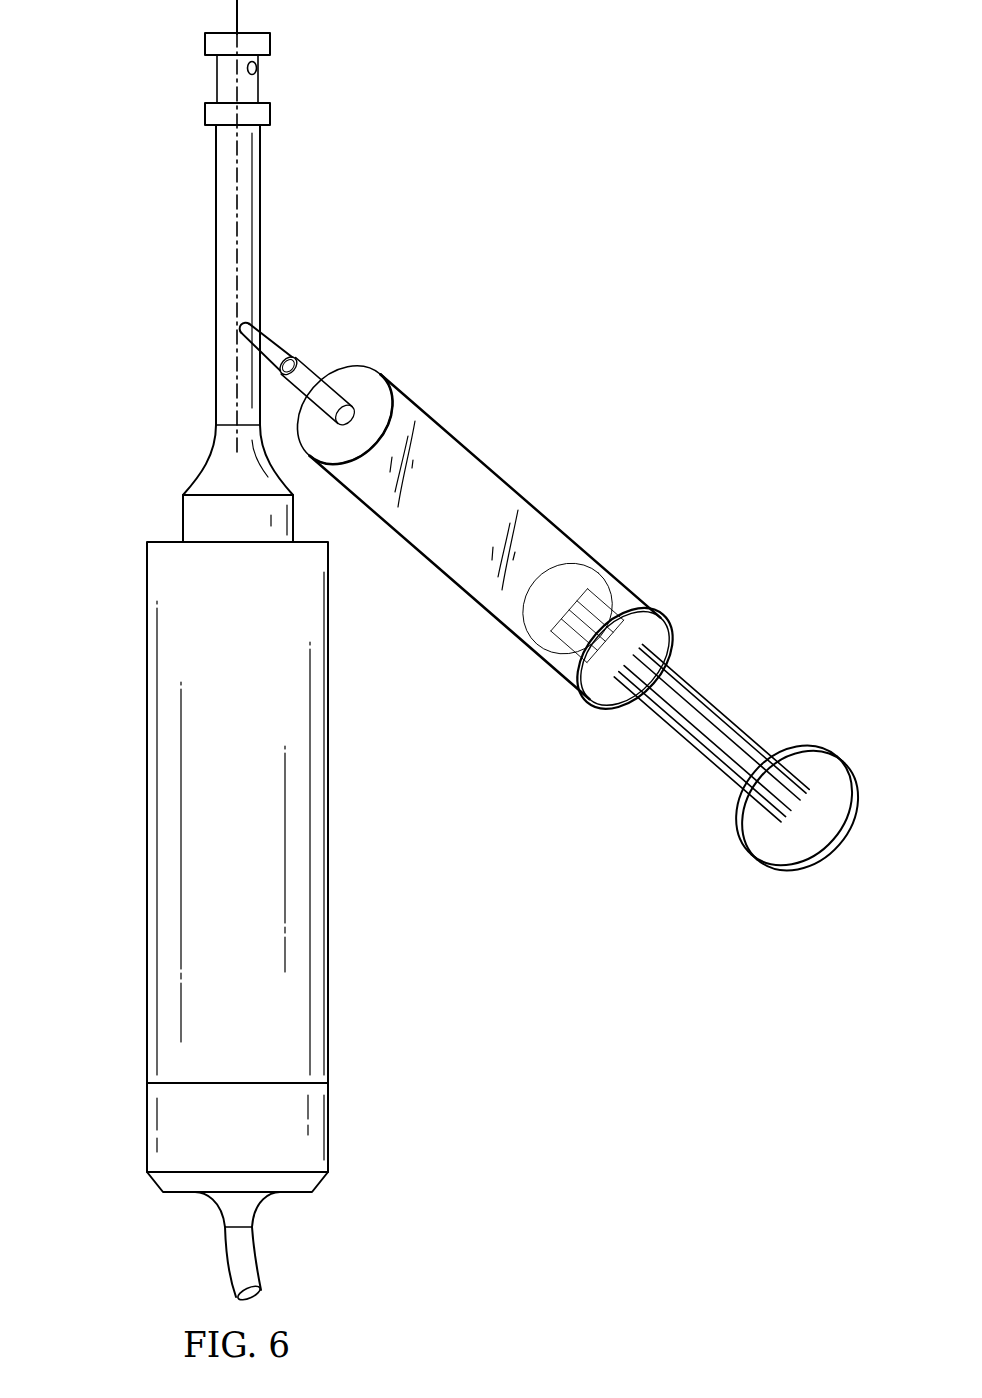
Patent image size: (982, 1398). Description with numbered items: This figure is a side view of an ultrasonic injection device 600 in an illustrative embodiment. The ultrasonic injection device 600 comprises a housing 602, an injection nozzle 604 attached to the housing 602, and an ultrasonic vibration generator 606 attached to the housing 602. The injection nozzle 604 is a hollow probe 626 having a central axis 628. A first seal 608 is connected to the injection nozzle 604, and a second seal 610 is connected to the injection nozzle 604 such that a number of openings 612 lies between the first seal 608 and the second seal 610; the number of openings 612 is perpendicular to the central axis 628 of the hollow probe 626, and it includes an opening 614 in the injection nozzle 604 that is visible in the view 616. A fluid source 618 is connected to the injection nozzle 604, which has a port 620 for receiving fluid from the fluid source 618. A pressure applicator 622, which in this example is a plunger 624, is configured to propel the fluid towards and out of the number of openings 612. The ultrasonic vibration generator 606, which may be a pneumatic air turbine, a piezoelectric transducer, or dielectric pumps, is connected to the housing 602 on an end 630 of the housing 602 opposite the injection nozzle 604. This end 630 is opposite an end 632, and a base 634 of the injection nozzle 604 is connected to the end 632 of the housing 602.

The ultrasonic injection device 600 is at (490, 130).
The housing 602 is at (147, 993).
The injection nozzle 604 is at (206, 315).
The ultrasonic vibration generator 606 is at (172, 1128).
The first seal 608 is at (205, 46).
The second seal 610 is at (205, 116).
The number of openings 612 is at (271, 74).
The opening 614 is at (258, 66).
The view 616 is at (695, 55).
The fluid source 618 is at (493, 466).
The port 620 is at (252, 328).
The pressure applicator 622 is at (708, 688).
The plunger 624 is at (808, 845).
The hollow probe 626 is at (216, 276).
The central axis 628 is at (232, 357).
The end 630 is at (352, 1194).
The end 632 is at (111, 552).
The base 634 is at (192, 517).